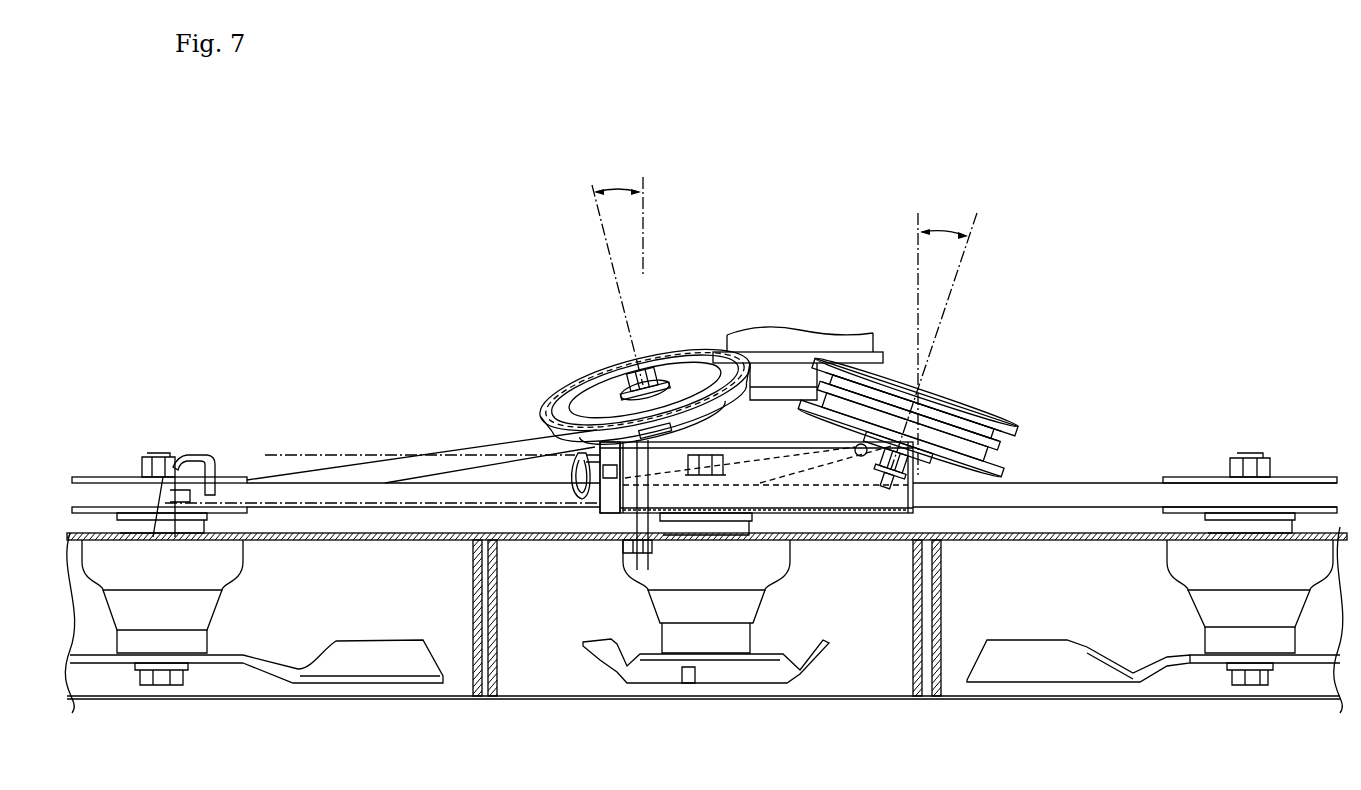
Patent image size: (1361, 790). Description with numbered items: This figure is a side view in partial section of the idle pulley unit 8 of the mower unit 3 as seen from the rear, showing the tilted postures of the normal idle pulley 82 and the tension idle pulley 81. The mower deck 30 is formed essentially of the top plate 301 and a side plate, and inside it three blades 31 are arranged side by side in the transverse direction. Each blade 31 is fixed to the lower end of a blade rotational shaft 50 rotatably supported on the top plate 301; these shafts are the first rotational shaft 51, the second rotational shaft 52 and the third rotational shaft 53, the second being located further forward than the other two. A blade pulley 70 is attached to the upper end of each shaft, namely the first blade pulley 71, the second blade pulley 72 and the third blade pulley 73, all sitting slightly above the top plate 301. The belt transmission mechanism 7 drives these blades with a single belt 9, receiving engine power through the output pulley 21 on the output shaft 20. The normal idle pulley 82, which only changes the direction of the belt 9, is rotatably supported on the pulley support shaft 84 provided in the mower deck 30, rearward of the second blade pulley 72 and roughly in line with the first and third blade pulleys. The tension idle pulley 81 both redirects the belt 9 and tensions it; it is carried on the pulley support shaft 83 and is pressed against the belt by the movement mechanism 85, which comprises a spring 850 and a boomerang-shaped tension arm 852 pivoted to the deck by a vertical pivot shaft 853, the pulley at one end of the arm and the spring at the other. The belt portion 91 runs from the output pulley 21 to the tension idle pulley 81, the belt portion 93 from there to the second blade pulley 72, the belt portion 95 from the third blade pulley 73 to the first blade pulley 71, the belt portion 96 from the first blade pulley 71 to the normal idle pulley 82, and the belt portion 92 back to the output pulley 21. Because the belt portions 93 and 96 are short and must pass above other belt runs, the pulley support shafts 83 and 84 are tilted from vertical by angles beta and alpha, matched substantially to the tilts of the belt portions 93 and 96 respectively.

The mower unit 3 is at (248, 233).
The belt transmission mechanism 7 is at (443, 405).
The idle pulley unit 8 is at (1026, 348).
The belt 9 is at (664, 428).
The output shaft 20 is at (793, 397).
The output pulley 21 is at (848, 357).
The mower deck 30 is at (325, 522).
The top plate 301 is at (365, 543).
The blade 31 is at (332, 680).
The blade rotational shaft 50 is at (718, 468).
The first rotational shaft 51 is at (163, 457).
The second rotational shaft 52 is at (710, 476).
The third rotational shaft 53 is at (1248, 452).
The blade pulley 70 is at (704, 373).
The first blade pulley 71 is at (98, 480).
The second blade pulley 72 is at (763, 463).
The third blade pulley 73 is at (1175, 477).
The tension idle pulley 81 is at (985, 410).
The normal idle pulley 82 is at (560, 407).
The pulley support shaft 83 is at (917, 457).
The pulley support shaft 84 is at (643, 387).
The movement mechanism 85 is at (594, 523).
The spring 850 is at (578, 468).
The tension arm 852 is at (782, 502).
The pivot shaft 853 is at (625, 527).
The belt portion 91 is at (895, 372).
The belt portion 92 is at (693, 357).
The belt portion 93 is at (860, 463).
The belt portion 95 is at (1050, 490).
The belt portion 96 is at (413, 463).